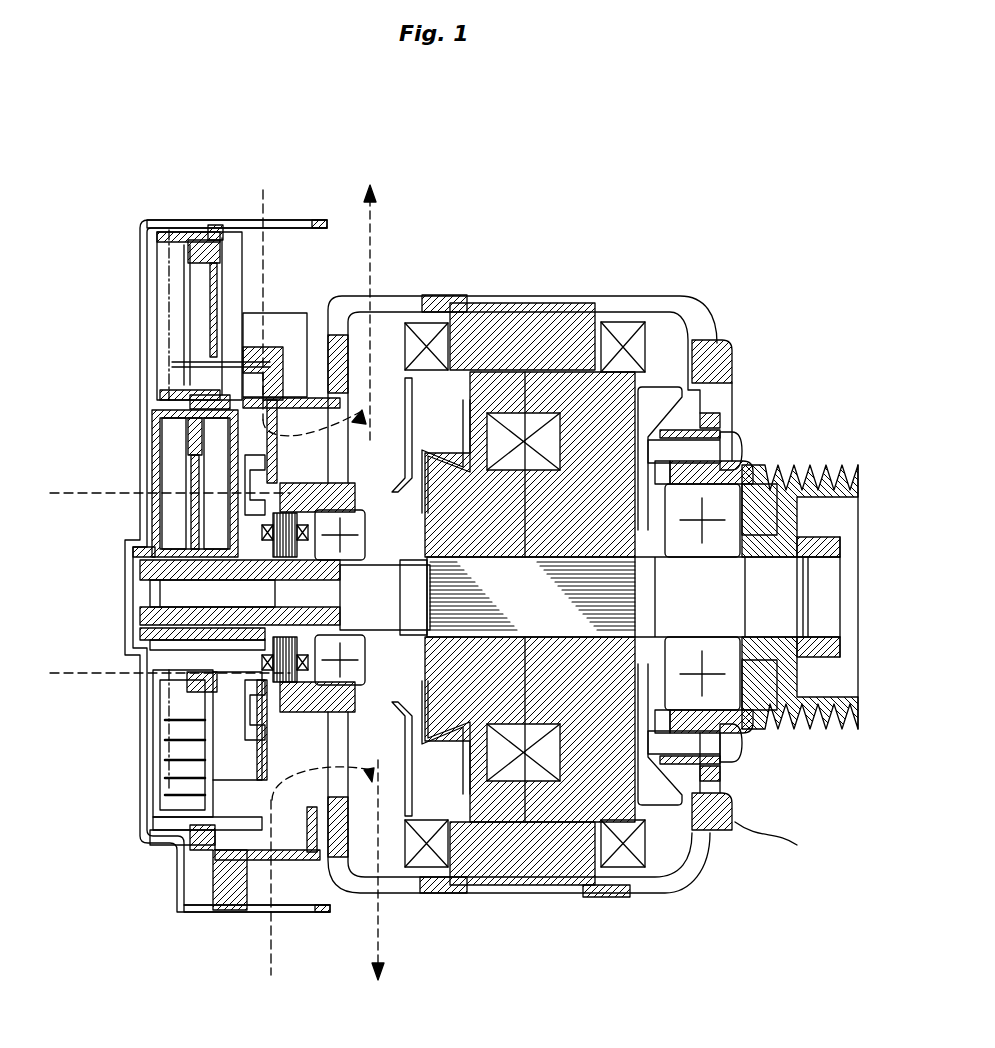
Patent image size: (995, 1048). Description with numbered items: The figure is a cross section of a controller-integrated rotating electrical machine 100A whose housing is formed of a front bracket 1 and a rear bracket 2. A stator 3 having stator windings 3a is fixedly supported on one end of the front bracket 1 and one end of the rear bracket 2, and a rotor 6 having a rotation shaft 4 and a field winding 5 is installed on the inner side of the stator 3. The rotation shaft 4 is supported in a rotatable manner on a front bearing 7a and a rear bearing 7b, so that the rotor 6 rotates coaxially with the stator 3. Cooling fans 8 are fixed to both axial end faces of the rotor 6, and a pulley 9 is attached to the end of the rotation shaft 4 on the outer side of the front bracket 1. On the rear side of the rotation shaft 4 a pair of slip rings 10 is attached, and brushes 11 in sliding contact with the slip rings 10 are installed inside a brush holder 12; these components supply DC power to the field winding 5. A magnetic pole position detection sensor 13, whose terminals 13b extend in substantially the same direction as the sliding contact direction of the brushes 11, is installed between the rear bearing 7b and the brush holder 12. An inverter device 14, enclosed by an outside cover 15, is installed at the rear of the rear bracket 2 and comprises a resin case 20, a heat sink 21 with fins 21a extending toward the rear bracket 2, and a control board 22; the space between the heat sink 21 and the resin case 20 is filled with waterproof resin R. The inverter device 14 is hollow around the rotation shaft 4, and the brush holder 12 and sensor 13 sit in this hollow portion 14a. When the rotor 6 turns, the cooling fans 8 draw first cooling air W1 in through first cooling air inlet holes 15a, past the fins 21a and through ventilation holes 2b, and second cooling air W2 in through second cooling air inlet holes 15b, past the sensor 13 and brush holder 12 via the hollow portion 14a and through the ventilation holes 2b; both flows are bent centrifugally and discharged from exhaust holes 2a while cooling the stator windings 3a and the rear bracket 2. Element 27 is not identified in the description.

The front bracket 1 is at (772, 847).
The rear bracket 2 is at (440, 845).
The exhaust holes 2a is at (346, 297).
The ventilation holes 2b is at (326, 835).
The stator 3 is at (523, 880).
The stator windings 3a is at (475, 885).
The rotation shaft 4 is at (770, 586).
The field winding 5 is at (537, 300).
The rotor 6 is at (590, 437).
The front bearing 7a is at (745, 465).
The rear bearing 7b is at (400, 300).
The cooling fans 8 is at (653, 400).
The pulley 9 is at (820, 460).
The slip rings 10 is at (148, 578).
The brushes 11 is at (175, 522).
The brush holder 12 is at (185, 455).
The magnetic pole position detection sensor 13 is at (240, 617).
The terminals 13b is at (270, 318).
The inverter device 14 is at (210, 835).
The hollow portion 14a is at (185, 662).
The outside cover 15 is at (140, 238).
The first cooling air inlet holes 15a is at (292, 222).
The second cooling air inlet holes 15b is at (150, 410).
The resin case 20 is at (200, 833).
The heat sink 21 is at (232, 832).
The fins 21a is at (258, 300).
The control board 22 is at (212, 800).
The connector with terminals 27 is at (208, 770).
The waterproof resin R is at (178, 320).
The first cooling air W1 is at (271, 577).
The second cooling air W2 is at (191, 605).
The controller-integrated rotating electrical machine 100A is at (693, 1004).